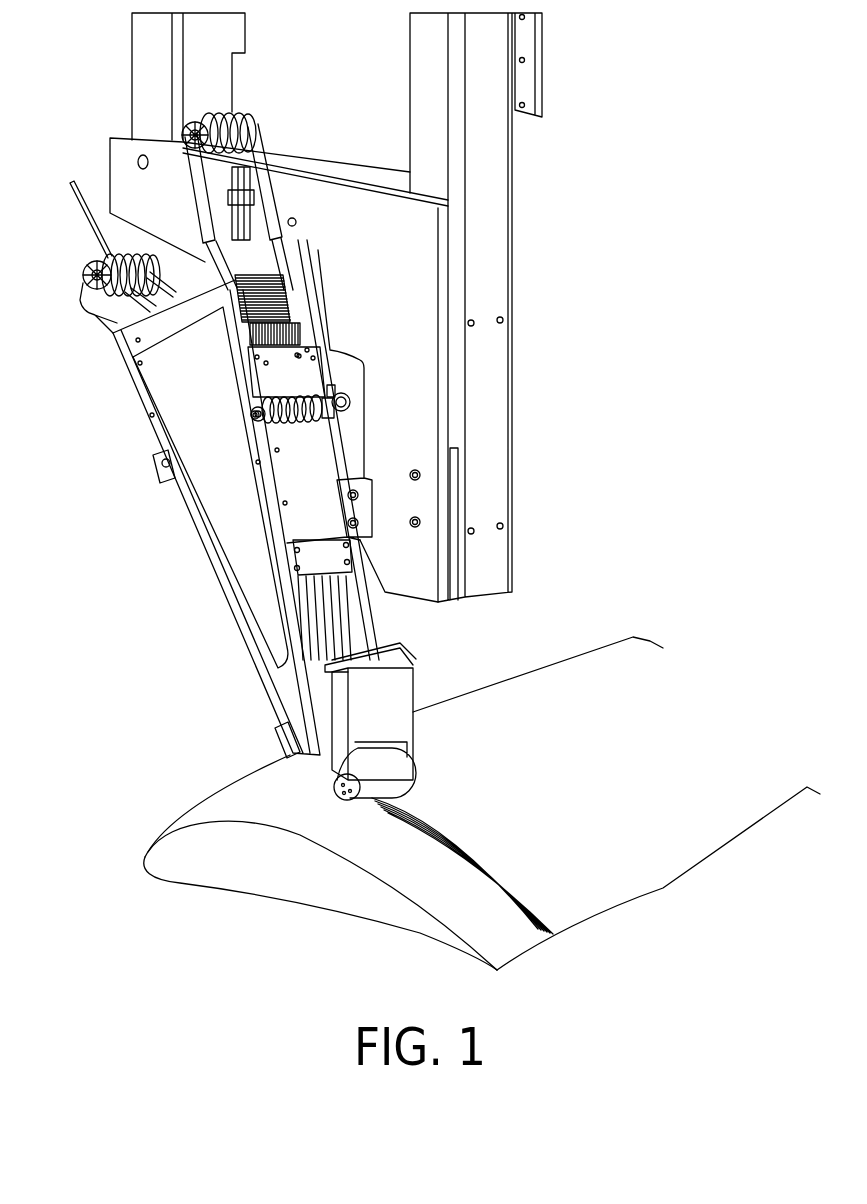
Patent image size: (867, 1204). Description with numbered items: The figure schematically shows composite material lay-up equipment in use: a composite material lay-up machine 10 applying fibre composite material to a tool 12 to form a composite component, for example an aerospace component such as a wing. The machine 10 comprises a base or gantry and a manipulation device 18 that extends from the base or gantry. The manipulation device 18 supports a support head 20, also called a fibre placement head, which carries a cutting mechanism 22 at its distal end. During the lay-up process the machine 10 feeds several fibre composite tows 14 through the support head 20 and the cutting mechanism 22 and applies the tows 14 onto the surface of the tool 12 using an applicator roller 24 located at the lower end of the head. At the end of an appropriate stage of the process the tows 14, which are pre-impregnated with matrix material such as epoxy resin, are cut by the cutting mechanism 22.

The composite material lay-up machine 10 is at (606, 77).
The tool 12 is at (661, 857).
The fibre composite tows 14 is at (90, 228).
The manipulation device 18 is at (492, 177).
The support head 20 is at (296, 514).
The cutting mechanism 22 is at (308, 635).
The applicator roller 24 is at (378, 778).